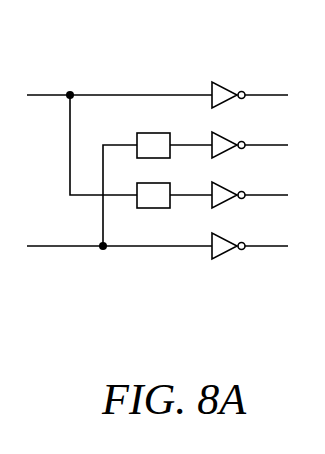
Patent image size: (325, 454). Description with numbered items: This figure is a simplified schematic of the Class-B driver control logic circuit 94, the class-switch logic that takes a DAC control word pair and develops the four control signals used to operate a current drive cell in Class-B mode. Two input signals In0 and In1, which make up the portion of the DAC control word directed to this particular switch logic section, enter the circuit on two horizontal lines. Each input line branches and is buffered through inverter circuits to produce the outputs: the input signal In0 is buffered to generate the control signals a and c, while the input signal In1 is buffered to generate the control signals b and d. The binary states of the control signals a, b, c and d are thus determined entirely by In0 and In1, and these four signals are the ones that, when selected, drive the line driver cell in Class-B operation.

The Class-B driver control logic circuit 94 is at (170, 65).
The first input signal In0 is at (119, 83).
The second input signal In1 is at (119, 259).
The control signal a is at (250, 89).
The control signal b is at (250, 139).
The control signal c is at (250, 189).
The control signal d is at (250, 240).